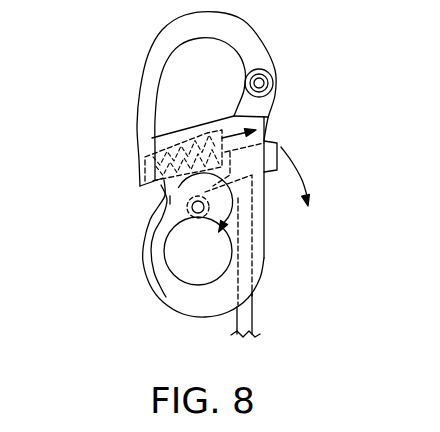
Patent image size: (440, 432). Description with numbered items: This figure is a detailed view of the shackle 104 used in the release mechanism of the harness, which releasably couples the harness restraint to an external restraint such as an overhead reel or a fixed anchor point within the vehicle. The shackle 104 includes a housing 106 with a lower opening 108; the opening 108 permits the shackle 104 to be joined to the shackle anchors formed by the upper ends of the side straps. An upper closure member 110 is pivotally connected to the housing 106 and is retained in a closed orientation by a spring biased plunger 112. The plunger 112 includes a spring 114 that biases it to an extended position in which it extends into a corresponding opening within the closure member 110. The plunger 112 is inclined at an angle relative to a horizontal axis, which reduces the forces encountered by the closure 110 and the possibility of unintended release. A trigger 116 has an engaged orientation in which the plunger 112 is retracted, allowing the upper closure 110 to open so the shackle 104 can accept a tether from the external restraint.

The shackle 104 is at (302, 96).
The housing 106 is at (265, 321).
The lower opening 108 is at (178, 270).
The upper closure member 110 is at (142, 80).
The spring biased plunger 112 is at (141, 184).
The spring 114 is at (147, 138).
The trigger 116 is at (266, 139).